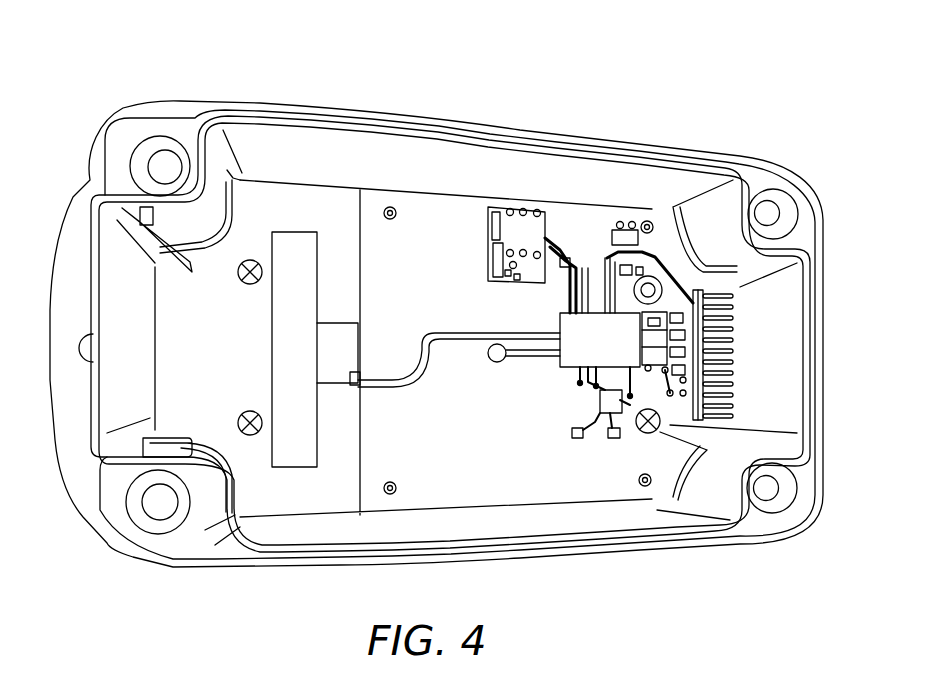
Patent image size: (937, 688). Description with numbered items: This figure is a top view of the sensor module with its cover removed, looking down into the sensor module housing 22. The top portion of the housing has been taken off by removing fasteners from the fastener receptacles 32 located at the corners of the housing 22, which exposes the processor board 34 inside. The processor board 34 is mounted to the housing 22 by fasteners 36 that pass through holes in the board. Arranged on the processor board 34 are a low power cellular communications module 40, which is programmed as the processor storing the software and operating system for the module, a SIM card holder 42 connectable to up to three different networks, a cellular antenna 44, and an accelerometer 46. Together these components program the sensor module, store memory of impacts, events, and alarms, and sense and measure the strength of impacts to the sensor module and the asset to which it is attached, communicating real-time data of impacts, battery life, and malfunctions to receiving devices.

The sensor module housing 22 is at (758, 123).
The fastener receptacles 32 is at (158, 157).
The processor board 34 is at (541, 455).
The fasteners 36 is at (252, 262).
The communications module 40 is at (593, 323).
The SIM card holder 42 is at (510, 228).
The cellular antenna 44 is at (300, 253).
The accelerometer 46 is at (658, 280).